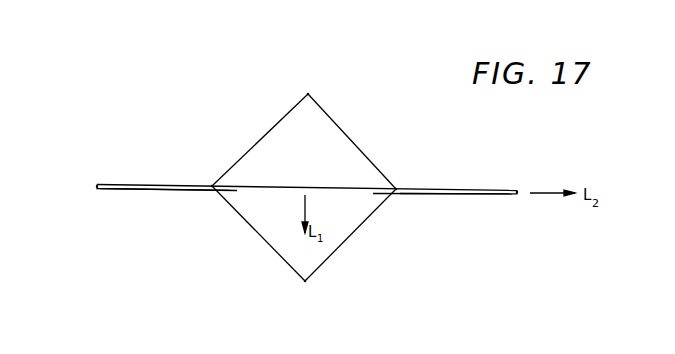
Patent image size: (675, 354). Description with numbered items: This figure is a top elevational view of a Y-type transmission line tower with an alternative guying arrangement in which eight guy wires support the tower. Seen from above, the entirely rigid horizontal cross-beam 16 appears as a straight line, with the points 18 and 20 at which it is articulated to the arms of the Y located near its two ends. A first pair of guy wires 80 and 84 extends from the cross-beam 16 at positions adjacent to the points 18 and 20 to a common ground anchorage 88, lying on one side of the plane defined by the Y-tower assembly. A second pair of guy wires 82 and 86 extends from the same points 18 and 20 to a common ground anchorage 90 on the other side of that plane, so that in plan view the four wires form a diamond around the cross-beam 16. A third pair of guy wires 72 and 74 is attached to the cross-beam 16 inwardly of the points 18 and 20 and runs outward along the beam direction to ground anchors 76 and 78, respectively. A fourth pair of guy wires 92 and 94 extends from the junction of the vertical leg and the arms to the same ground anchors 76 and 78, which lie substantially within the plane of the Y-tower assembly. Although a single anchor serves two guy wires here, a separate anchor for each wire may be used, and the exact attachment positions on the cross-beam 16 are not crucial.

The horizontal cross-beam 16 is at (287, 187).
The point 18 is at (395, 195).
The point 20 is at (212, 190).
The guy wire 72 is at (430, 190).
The guy wire 74 is at (170, 184).
The ground anchor 76 is at (523, 195).
The ground anchor 78 is at (97, 185).
The guy wire 80 is at (338, 250).
The guy wire 82 is at (370, 155).
The guy wire 84 is at (260, 238).
The guy wire 86 is at (262, 137).
The common ground anchorage 88 is at (305, 283).
The common ground anchorage 90 is at (308, 93).
The guy wire 92 is at (470, 190).
The guy wire 94 is at (125, 184).